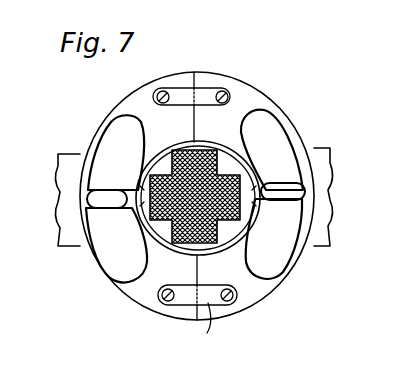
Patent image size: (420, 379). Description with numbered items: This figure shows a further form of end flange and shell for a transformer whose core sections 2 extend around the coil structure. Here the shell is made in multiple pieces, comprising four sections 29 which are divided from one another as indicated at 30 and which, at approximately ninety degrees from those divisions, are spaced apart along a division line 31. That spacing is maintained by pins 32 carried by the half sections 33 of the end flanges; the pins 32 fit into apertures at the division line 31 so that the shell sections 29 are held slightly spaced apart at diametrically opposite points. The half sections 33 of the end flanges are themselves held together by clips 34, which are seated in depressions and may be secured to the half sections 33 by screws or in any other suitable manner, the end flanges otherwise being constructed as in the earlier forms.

The core sections 2 is at (152, 163).
The shell sections 29 is at (166, 148).
The division of shell sections 30 is at (198, 146).
The division line 31 is at (250, 187).
The pins 32 is at (127, 180).
The half sections of the end flanges 33 is at (266, 97).
The clips 34 is at (211, 328).